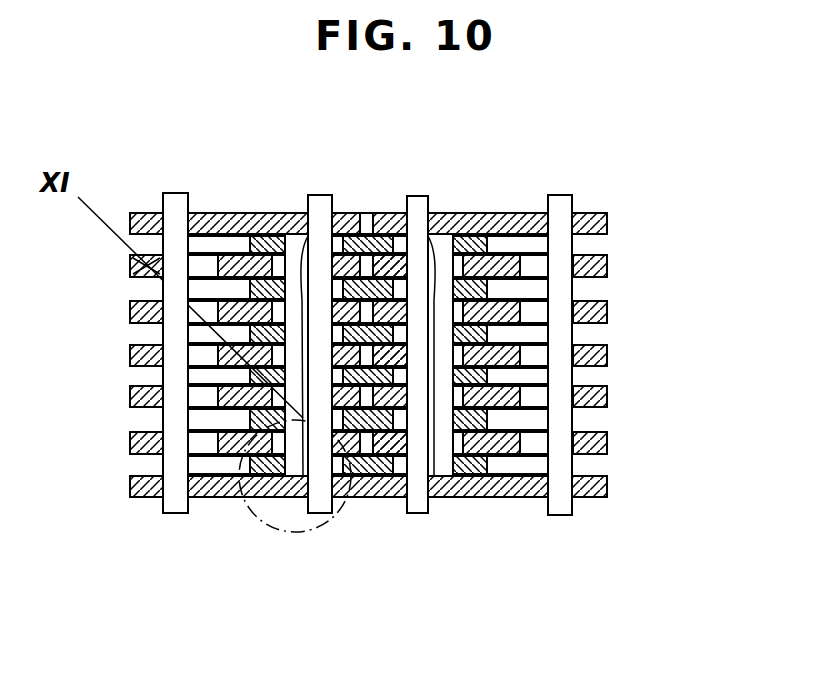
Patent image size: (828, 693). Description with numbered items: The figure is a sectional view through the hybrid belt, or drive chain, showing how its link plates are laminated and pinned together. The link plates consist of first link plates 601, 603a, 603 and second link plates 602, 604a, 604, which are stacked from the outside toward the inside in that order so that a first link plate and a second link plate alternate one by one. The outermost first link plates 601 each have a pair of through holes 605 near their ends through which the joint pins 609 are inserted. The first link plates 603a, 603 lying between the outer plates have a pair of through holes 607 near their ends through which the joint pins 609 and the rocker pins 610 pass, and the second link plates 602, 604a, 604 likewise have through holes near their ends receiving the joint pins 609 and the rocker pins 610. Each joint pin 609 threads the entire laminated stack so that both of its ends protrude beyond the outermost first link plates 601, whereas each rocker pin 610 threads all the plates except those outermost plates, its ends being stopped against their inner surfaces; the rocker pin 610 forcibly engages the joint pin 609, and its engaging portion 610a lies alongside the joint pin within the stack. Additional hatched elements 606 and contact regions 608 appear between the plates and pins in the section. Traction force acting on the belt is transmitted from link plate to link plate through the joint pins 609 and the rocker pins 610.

The first link plate 601 is at (605, 227).
The second link plate 602 is at (512, 240).
The first link plate 603 is at (605, 317).
The first link plate 603a is at (605, 265).
The second link plate 604 is at (575, 297).
The second link plate 604a is at (530, 232).
The through hole 605 is at (405, 222).
The connecting conductor 606 is at (272, 238).
The through hole 607 is at (385, 212).
The via conductor 608 is at (233, 238).
The joint pin 609 is at (310, 194).
The rocker pin 610 is at (460, 237).
The connecting portion 610a is at (298, 262).